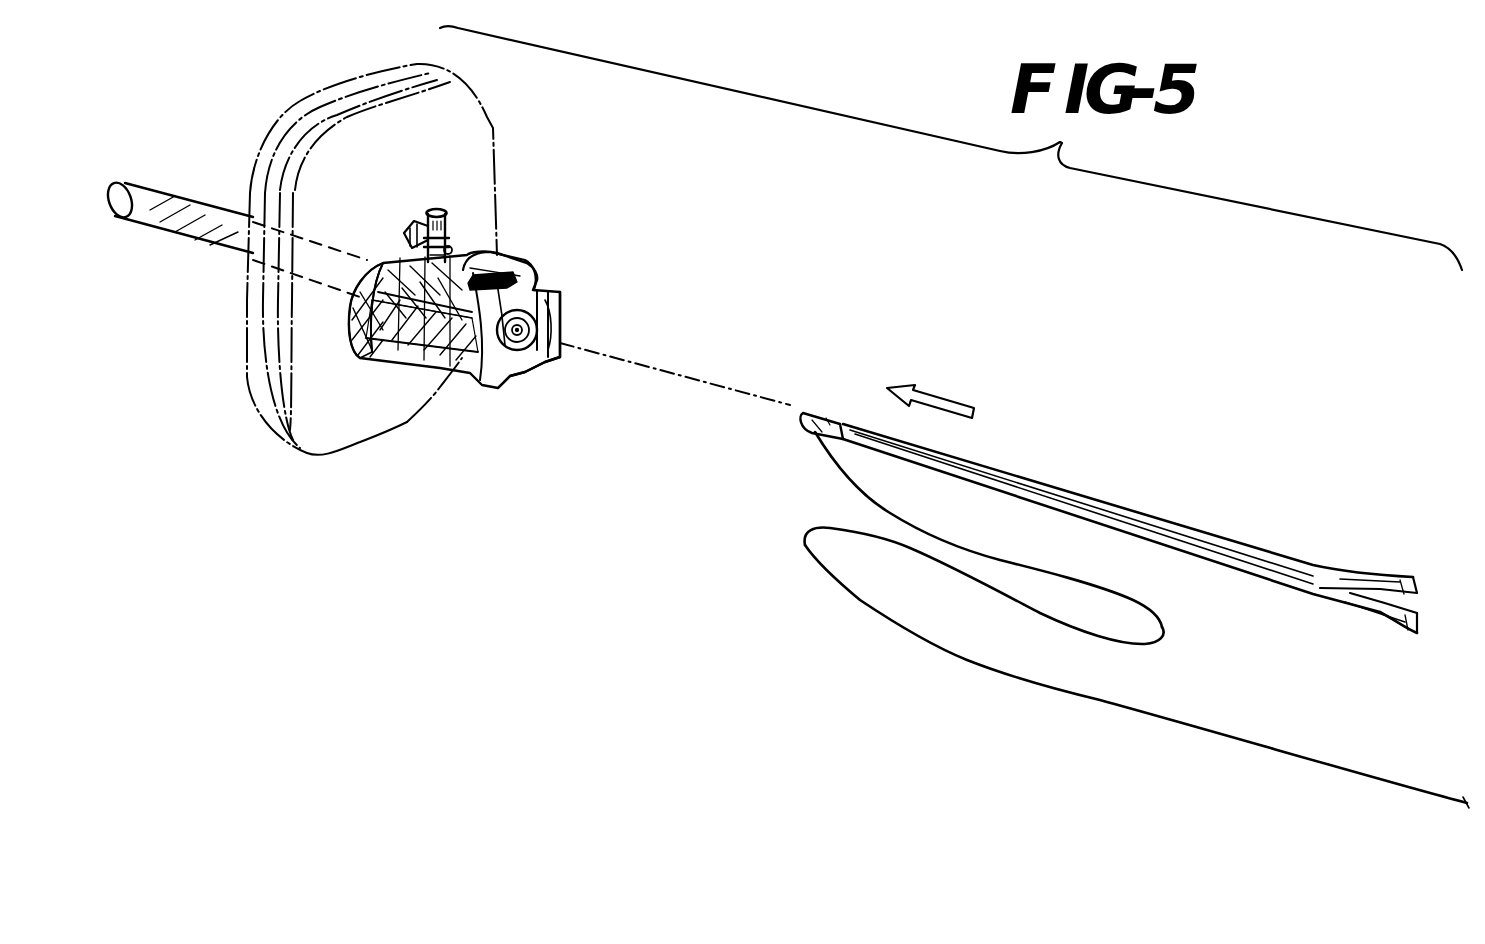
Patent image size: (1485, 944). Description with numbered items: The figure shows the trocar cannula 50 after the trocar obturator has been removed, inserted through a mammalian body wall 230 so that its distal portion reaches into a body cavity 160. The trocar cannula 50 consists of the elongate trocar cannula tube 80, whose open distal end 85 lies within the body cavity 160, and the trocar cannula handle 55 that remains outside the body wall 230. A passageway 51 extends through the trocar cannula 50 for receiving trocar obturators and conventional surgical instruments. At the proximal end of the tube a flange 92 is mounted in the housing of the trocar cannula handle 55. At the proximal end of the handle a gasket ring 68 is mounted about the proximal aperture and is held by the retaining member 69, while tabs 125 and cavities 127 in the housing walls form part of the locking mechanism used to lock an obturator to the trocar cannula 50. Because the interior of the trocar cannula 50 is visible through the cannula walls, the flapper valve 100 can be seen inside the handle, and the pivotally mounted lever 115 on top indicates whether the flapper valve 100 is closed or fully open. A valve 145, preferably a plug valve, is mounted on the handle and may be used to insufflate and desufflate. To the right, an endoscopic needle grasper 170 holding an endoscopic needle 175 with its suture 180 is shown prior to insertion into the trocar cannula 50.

The trocar cannula 50 is at (533, 371).
The passageway 51 is at (563, 360).
The trocar cannula handle 55 is at (507, 380).
The gasket ring 68 is at (502, 365).
The retaining member 69 is at (532, 365).
The trocar cannula tube 80 is at (187, 192).
The open distal end 85 is at (113, 190).
The flange 92 is at (362, 362).
The flapper valve 100 is at (410, 362).
The pivotally mounted lever 115 is at (522, 258).
The tabs 125 is at (560, 320).
The cavities 127 is at (540, 282).
The valve 145 is at (431, 208).
The body cavity 160 is at (211, 340).
The endoscopic needle grasper 170 is at (1143, 511).
The endoscopic needle 175 is at (800, 413).
The suture 180 is at (983, 667).
The mammalian body wall 230 is at (520, 127).